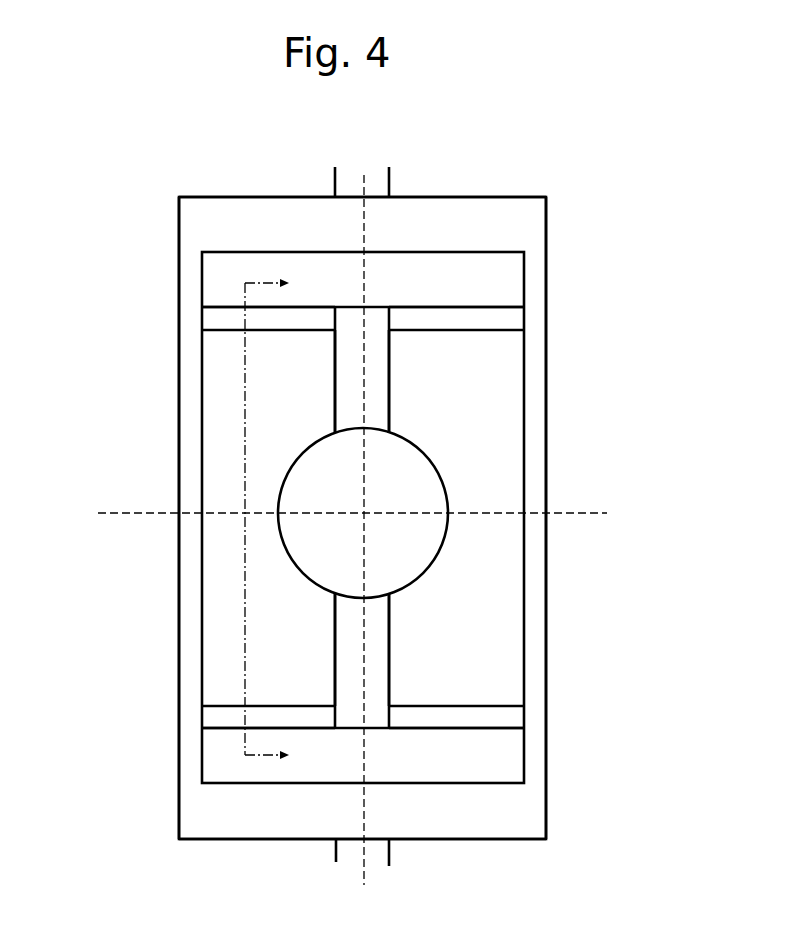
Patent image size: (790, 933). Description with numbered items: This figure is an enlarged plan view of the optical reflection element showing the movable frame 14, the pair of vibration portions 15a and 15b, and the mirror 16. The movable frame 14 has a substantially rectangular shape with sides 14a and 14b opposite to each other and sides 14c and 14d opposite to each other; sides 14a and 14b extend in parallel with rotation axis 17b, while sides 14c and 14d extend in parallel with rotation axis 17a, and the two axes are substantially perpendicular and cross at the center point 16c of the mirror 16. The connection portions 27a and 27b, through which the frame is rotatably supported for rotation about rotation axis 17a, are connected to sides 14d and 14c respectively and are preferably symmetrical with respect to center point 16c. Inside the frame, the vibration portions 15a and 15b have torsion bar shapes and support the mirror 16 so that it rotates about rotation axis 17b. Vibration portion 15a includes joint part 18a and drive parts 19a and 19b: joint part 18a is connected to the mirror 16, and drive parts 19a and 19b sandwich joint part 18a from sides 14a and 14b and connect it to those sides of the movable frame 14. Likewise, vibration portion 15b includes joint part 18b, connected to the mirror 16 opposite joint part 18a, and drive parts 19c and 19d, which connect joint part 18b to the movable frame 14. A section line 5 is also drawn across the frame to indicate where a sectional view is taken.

The section line V-V 5 is at (276, 523).
The movable frame 14 is at (190, 662).
The side of movable frame 14a is at (190, 720).
The side of movable frame 14b is at (533, 748).
The side of movable frame 14c is at (233, 213).
The side of movable frame 14d is at (263, 818).
The vibration portion 15a is at (658, 255).
The vibration portion 15b is at (658, 598).
The mirror 16 is at (327, 534).
The center point of mirror 16c is at (363, 513).
The rotation axis 17a is at (581, 511).
The rotation axis 17b is at (364, 862).
The joint part 18a is at (368, 374).
The joint part 18b is at (368, 618).
The drive part 19a is at (278, 320).
The drive part 19b is at (490, 319).
The drive part 19c is at (290, 718).
The drive part 19d is at (480, 718).
The connection portion 27a is at (340, 858).
The connection portion 27b is at (377, 182).